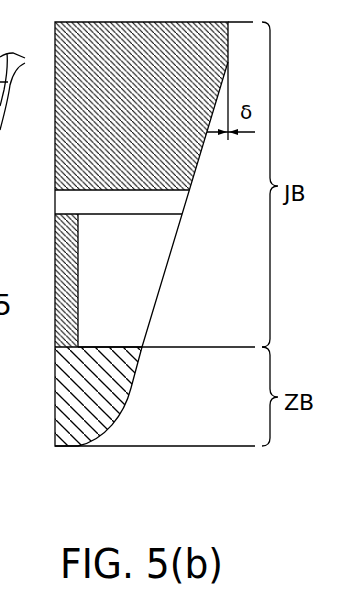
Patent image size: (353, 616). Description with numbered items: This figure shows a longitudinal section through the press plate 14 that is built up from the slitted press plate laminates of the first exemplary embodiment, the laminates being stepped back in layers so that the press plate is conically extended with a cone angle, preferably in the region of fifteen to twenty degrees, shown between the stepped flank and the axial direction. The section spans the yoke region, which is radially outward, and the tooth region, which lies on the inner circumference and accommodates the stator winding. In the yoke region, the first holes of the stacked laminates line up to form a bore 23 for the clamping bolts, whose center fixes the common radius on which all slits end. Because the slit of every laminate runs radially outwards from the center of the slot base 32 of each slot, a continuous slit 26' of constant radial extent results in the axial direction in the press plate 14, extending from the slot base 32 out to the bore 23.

The press plate 14 is at (87, 413).
The bore 23 is at (147, 202).
The continuous slit 26' is at (159, 280).
The slot base 32 is at (81, 351).